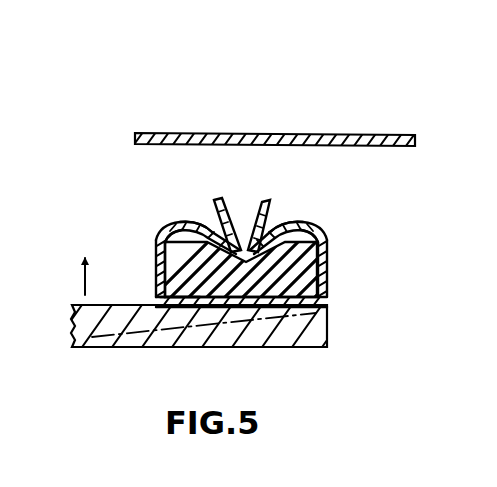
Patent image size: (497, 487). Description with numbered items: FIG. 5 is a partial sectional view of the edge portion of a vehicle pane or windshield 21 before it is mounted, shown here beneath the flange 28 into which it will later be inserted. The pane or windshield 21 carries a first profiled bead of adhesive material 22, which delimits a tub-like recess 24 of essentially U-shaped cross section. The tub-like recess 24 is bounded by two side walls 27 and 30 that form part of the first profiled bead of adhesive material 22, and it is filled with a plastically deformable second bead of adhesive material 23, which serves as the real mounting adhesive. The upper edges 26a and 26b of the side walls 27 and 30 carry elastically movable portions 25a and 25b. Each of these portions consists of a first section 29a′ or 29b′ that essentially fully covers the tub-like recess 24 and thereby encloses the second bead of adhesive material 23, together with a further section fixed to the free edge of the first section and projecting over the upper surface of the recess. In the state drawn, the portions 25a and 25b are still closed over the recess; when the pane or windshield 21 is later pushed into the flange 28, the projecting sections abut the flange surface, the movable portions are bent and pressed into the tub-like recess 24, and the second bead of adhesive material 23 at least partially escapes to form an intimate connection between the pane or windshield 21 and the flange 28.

The pane or windshield 21 is at (106, 346).
The first profiled bead of adhesive material 22 is at (248, 270).
The second bead of adhesive material 23 is at (160, 301).
The tub-like recess 24 is at (276, 300).
The elastically movable portion 25a is at (302, 198).
The elastically movable portion 25b is at (196, 203).
The upper edge 26a is at (326, 234).
The upper edge 26b is at (174, 228).
The side wall 27 is at (329, 291).
The flange 28 is at (296, 133).
The first section 29a′ is at (310, 223).
The first section 29b′ is at (200, 222).
The side wall 30 is at (160, 251).